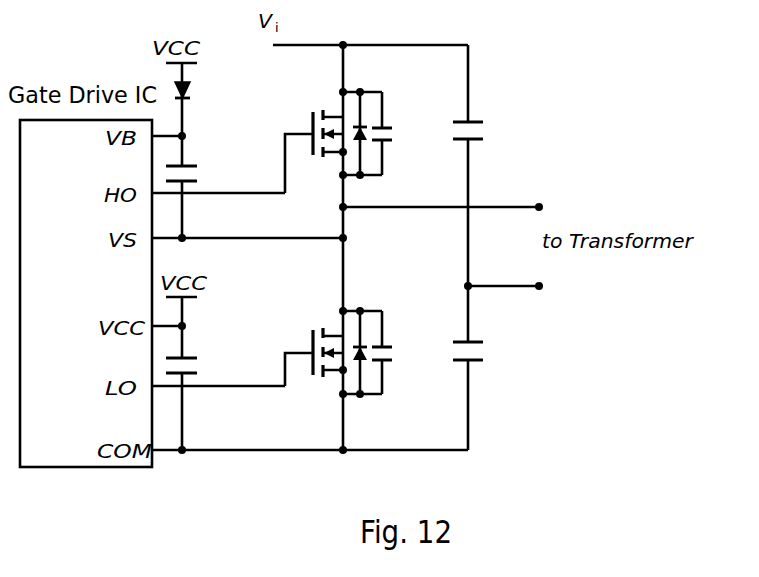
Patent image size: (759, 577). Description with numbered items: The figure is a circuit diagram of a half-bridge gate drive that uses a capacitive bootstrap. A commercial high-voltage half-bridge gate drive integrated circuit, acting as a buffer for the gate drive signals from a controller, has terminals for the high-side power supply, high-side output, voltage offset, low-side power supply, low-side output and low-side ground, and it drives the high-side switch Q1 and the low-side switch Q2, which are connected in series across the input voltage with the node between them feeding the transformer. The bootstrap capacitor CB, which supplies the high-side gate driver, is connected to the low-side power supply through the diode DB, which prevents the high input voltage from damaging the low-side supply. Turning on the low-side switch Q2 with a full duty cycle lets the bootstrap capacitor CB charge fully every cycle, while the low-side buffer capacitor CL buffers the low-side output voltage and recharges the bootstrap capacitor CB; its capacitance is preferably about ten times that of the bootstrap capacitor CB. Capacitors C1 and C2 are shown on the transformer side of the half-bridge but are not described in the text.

The diode DB is at (206, 91).
The bootstrap capacitor CB is at (199, 169).
The low-side buffer capacitor CL is at (197, 362).
The high-side switch Q1 is at (338, 144).
The low-side switch Q2 is at (338, 365).
The first capacitor C1 is at (487, 127).
The second capacitor C2 is at (487, 349).